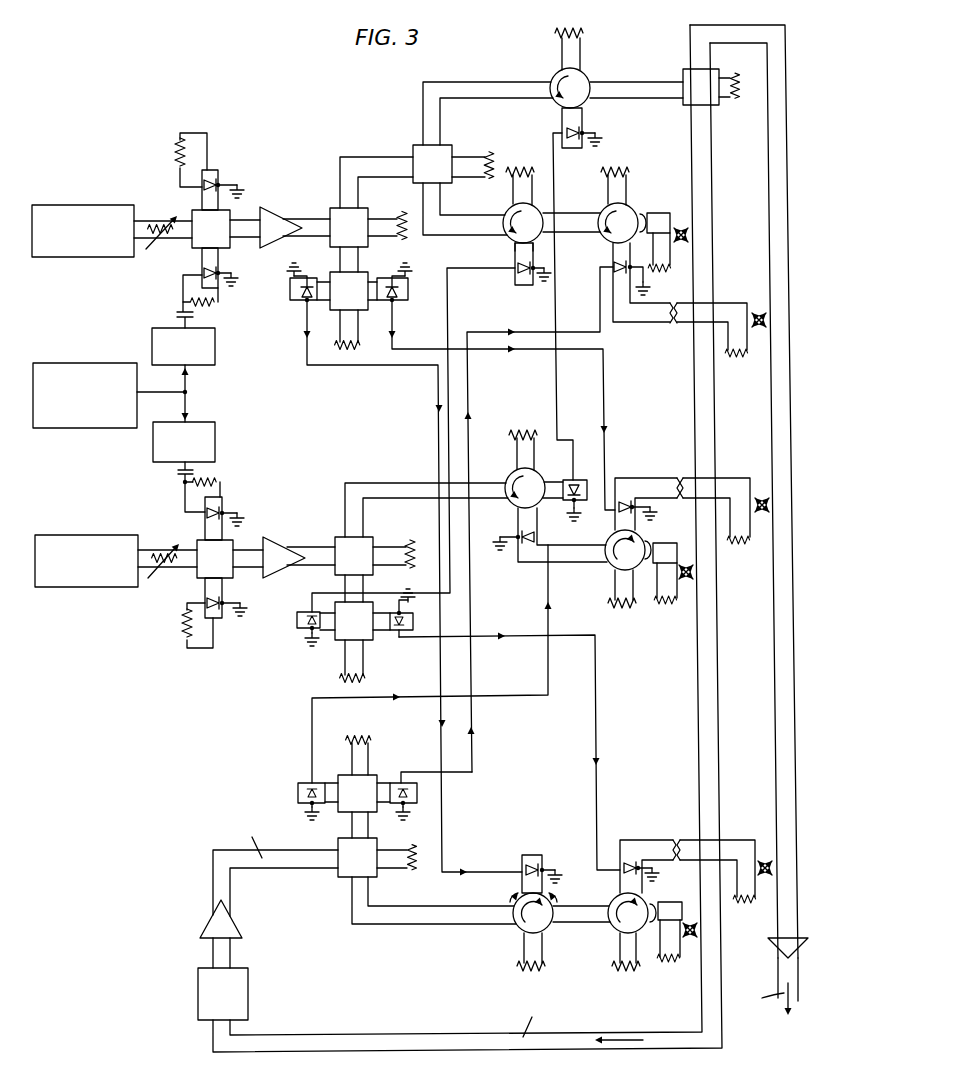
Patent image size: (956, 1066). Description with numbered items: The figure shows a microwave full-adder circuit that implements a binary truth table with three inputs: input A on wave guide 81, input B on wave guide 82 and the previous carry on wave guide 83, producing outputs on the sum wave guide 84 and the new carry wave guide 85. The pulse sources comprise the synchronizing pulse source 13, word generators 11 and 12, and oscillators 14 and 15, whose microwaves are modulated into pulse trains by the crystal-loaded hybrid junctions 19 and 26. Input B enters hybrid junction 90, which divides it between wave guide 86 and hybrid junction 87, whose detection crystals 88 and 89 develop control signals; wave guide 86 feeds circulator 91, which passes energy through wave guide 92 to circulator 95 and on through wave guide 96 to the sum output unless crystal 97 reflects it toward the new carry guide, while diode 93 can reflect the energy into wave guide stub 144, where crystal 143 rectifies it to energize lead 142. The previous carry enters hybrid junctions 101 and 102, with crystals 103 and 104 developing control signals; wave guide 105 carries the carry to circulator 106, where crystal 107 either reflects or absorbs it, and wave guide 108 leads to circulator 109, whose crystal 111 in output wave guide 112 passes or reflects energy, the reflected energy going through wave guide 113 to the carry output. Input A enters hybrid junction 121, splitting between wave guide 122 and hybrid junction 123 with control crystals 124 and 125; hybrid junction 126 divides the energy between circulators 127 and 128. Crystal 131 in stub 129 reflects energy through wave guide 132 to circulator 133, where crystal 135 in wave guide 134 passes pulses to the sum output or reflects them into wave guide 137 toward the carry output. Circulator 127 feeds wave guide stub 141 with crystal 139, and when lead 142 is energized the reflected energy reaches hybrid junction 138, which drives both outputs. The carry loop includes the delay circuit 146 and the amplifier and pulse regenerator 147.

The word generator 11 is at (170, 329).
The word generator 12 is at (170, 461).
The synchronizing pulse source 13 is at (78, 362).
The oscillator 14 is at (78, 206).
The oscillator 15 is at (80, 588).
The hybrid junction 19 is at (196, 242).
The hybrid junction 26 is at (200, 570).
The wave guide 81 is at (303, 234).
The wave guide 82 is at (314, 559).
The previous carry wave guide 83 is at (285, 862).
The sum output wave guide 84 is at (731, 31).
The new carry wave guide 85 is at (707, 167).
The wave guide 86 is at (380, 492).
The hybrid junction 87 is at (365, 631).
The detection crystal 88 is at (300, 620).
The detection crystal 89 is at (413, 621).
The hybrid junction 90 is at (365, 543).
The circulator 91 is at (516, 472).
The wave guide 92 is at (521, 518).
The diode 93 is at (528, 563).
The circulator 95 is at (614, 560).
The wave guide 96 is at (670, 480).
The crystal 97 is at (623, 502).
The hybrid junction 101 is at (343, 847).
The hybrid junction 102 is at (366, 782).
The crystal 103 is at (308, 785).
The crystal 104 is at (401, 791).
The wave guide 105 is at (393, 920).
The circulator 106 is at (523, 923).
The crystal 107 is at (525, 866).
The wave guide 108 is at (578, 917).
The circulator 109 is at (623, 921).
The crystal 111 is at (622, 874).
The output wave guide 112 is at (633, 843).
The wave guide 113 is at (663, 900).
The hybrid junction 121 is at (372, 236).
The wave guide 122 is at (356, 165).
The hybrid junction 123 is at (342, 283).
The control crystal 124 is at (304, 297).
The control crystal 125 is at (402, 297).
The hybrid junction 126 is at (442, 153).
The circulator 127 is at (558, 73).
The circulator 128 is at (508, 208).
The wave guide stub 129 is at (520, 250).
The crystal 131 is at (525, 280).
The wave guide 132 is at (577, 226).
The circulator 133 is at (606, 210).
The wave guide 134 is at (616, 251).
The crystal 135 is at (612, 270).
The wave guide 137 is at (657, 215).
The hybrid junction 138 is at (686, 77).
The crystal 139 is at (567, 131).
The wave guide stub 141 is at (578, 120).
The lead 142 is at (555, 372).
The crystal 143 is at (578, 484).
The wave guide stub 144 is at (556, 498).
The delay circuit 146 is at (240, 977).
The amplifier and pulse regenerator 147 is at (228, 927).